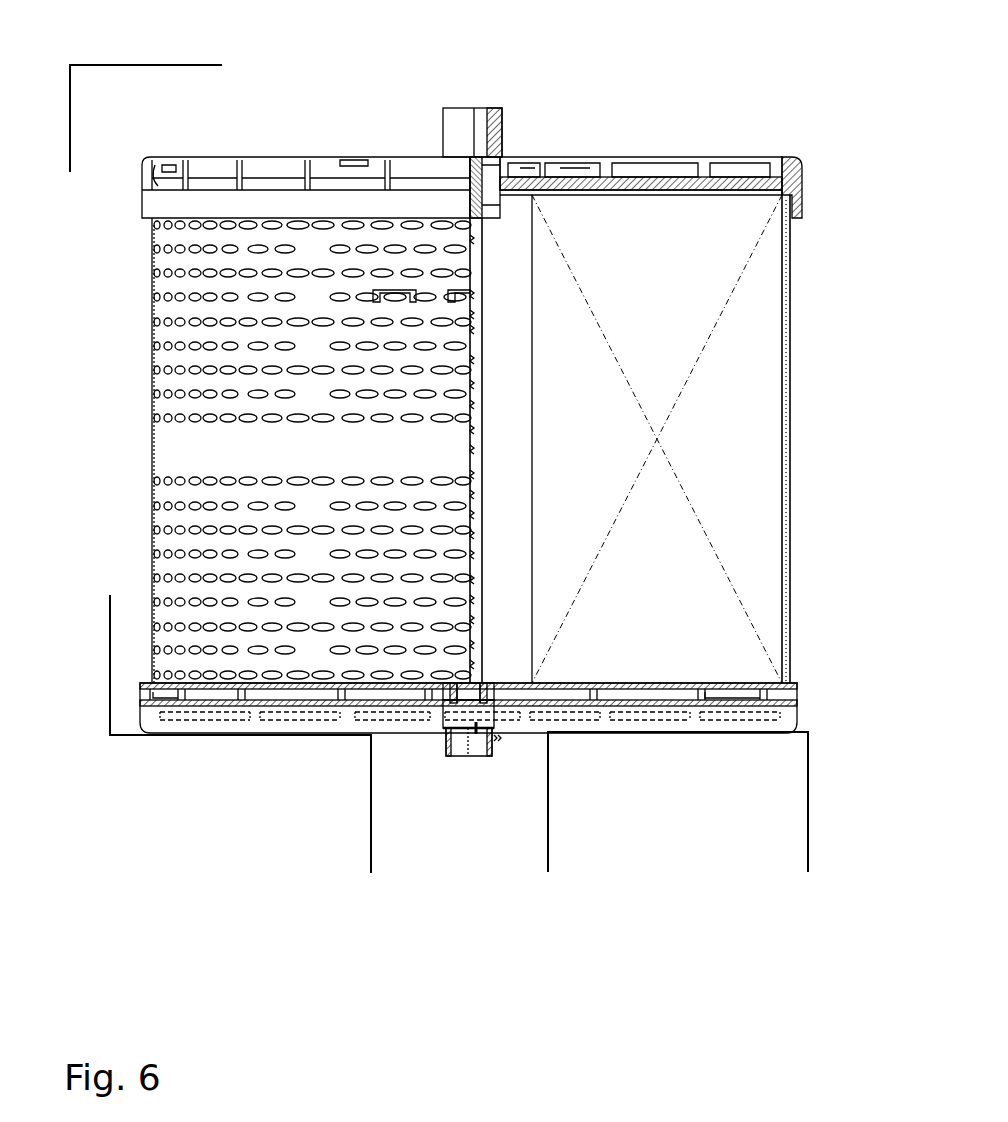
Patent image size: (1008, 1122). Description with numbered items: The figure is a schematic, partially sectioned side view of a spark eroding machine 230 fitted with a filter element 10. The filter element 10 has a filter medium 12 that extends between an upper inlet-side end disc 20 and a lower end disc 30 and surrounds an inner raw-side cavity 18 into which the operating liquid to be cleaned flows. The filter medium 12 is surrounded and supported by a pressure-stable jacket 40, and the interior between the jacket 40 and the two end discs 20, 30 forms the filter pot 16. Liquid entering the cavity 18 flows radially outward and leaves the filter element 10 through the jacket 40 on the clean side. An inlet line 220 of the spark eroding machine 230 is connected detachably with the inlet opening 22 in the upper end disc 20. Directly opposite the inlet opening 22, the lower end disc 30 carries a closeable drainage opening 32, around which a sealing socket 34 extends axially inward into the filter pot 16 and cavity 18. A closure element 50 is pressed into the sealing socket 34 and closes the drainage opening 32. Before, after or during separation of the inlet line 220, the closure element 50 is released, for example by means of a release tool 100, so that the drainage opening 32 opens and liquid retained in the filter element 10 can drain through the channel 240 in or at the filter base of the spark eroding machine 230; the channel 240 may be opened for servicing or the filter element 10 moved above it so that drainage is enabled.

The filter element 10 is at (740, 112).
The filter medium 12 is at (767, 398).
The filter pot 16 is at (760, 622).
The inner raw-side cavity 18 is at (497, 285).
The inlet-side end disc 20 is at (792, 155).
The inlet opening 22 is at (500, 155).
The end disc 30 is at (638, 679).
The drainage opening 32 is at (444, 740).
The sealing socket 34 is at (441, 697).
The jacket 40 is at (152, 362).
The closure element 50 is at (471, 696).
The release tool 100 is at (477, 758).
The inlet line 220 is at (442, 128).
The spark eroding machine 230 is at (228, 68).
The channel 240 is at (352, 812).